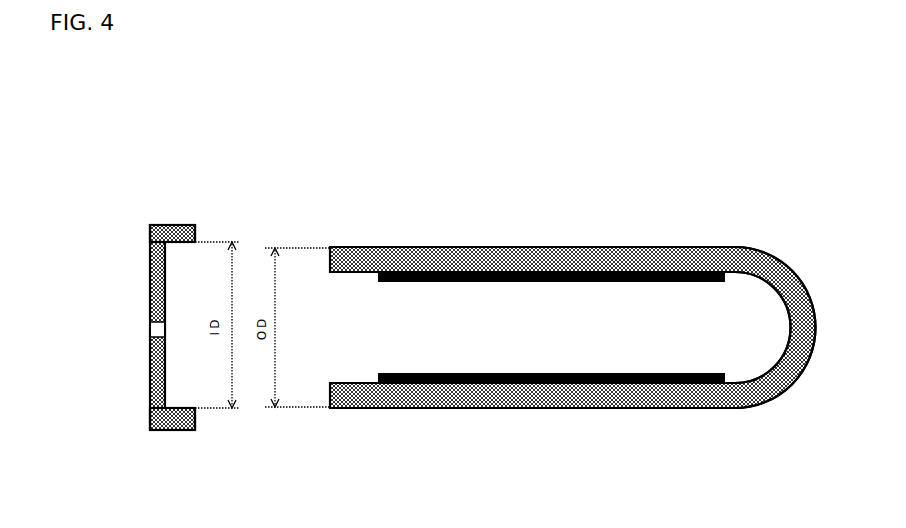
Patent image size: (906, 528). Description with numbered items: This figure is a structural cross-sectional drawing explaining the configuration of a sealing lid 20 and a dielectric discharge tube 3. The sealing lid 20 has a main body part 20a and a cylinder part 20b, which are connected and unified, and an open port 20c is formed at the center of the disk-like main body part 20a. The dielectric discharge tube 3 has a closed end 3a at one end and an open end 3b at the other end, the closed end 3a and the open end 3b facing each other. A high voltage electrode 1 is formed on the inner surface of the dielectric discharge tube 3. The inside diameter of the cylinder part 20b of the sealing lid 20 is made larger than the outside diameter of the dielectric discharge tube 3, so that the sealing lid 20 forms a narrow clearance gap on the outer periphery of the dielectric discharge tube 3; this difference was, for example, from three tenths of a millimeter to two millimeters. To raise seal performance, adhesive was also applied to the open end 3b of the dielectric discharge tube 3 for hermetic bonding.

The sealing lid 20 is at (136, 265).
The main body part 20a is at (150, 382).
The cylinder part 20b is at (182, 225).
The open port 20c is at (157, 330).
The dielectric discharge tube 3 is at (556, 253).
The closed end 3a is at (790, 262).
The open end 3b is at (330, 265).
The high voltage electrode 1 is at (472, 373).